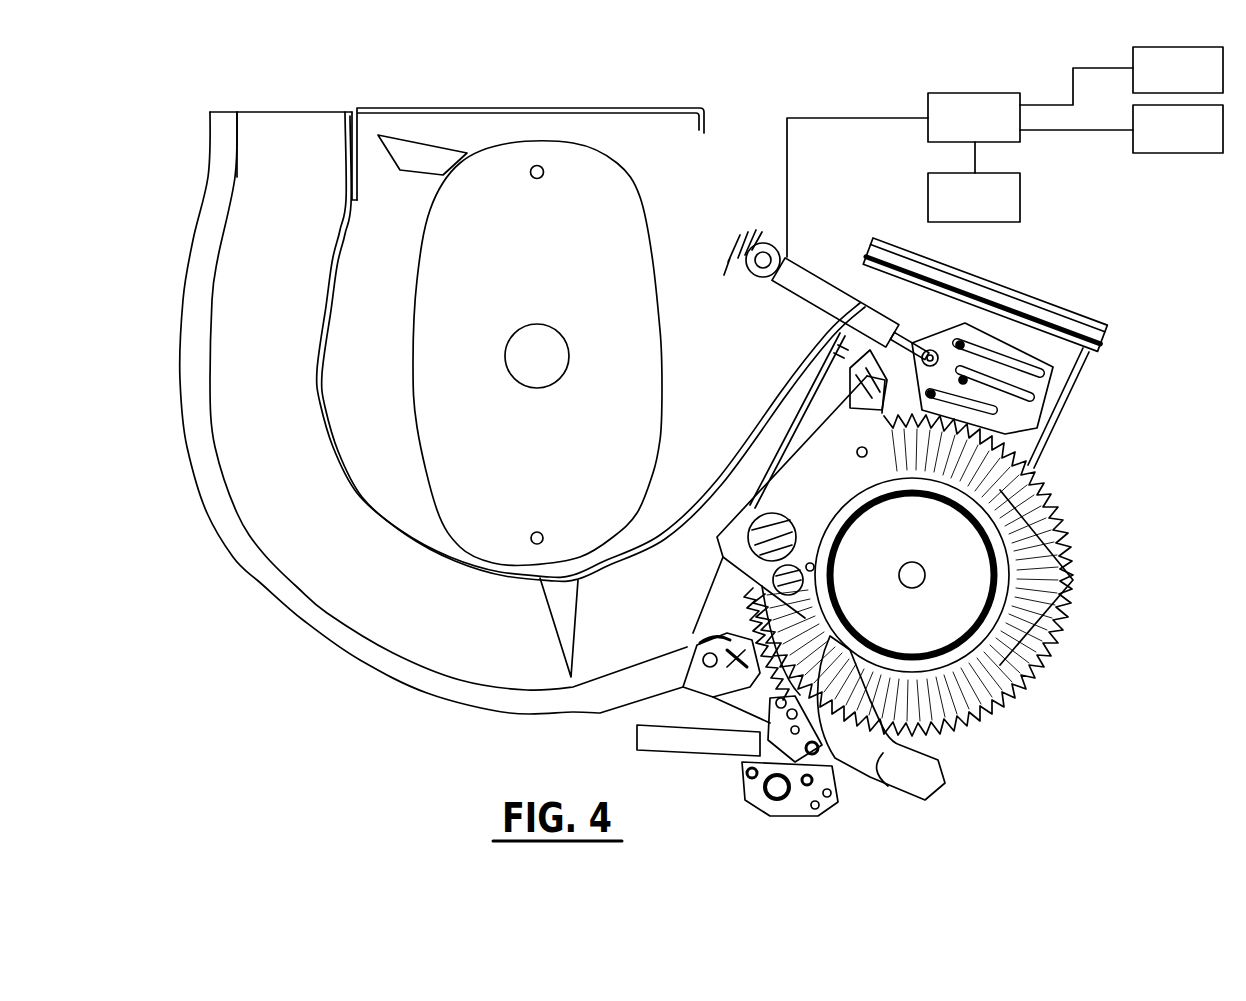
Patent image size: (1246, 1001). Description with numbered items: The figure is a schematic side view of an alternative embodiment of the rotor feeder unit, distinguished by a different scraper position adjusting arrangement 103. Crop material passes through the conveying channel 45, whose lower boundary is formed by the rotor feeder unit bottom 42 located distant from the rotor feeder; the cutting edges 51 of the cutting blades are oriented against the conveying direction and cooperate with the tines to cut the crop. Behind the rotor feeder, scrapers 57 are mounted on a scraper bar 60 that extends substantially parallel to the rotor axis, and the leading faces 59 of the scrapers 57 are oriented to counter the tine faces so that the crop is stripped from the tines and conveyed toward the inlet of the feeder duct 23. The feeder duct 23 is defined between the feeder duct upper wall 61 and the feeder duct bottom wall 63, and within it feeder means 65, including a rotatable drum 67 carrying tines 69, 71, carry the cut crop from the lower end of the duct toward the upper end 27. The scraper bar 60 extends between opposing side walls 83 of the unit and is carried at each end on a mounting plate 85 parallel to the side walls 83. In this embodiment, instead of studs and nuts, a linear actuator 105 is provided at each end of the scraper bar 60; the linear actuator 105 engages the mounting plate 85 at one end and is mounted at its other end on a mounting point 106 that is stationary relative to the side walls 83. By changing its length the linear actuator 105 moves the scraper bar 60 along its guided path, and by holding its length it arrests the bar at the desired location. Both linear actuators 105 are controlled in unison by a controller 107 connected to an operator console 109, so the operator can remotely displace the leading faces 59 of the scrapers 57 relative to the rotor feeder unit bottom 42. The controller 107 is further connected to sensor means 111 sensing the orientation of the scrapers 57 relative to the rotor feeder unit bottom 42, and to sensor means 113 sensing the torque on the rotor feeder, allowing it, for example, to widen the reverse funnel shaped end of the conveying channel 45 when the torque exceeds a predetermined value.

The feeder duct 23 is at (347, 565).
The upper end 27 is at (285, 140).
The rotor feeder unit bottom 42 is at (747, 703).
The conveying channel 45 is at (760, 683).
The cutting edges 51 is at (908, 575).
The scrapers 57 is at (813, 473).
The leading faces 59 is at (711, 562).
The scraper bar 60 is at (857, 357).
The feeder duct upper wall 61 is at (335, 437).
The feeder duct bottom wall 63 is at (277, 570).
The feeder means 65 is at (376, 294).
The rotatable drum 67 is at (433, 413).
The tines 69 is at (560, 600).
The tines 71 is at (433, 157).
The side walls 83 is at (1042, 340).
The mounting plate 85 is at (885, 380).
The scraper position adjusting arrangement 103 is at (989, 337).
The linear actuators 105 is at (837, 297).
The mounting point 106 is at (747, 257).
The controller 107 is at (1030, 120).
The operator console 109 is at (1178, 70).
The sensor means 111 is at (1178, 129).
The sensor means 113 is at (974, 197).